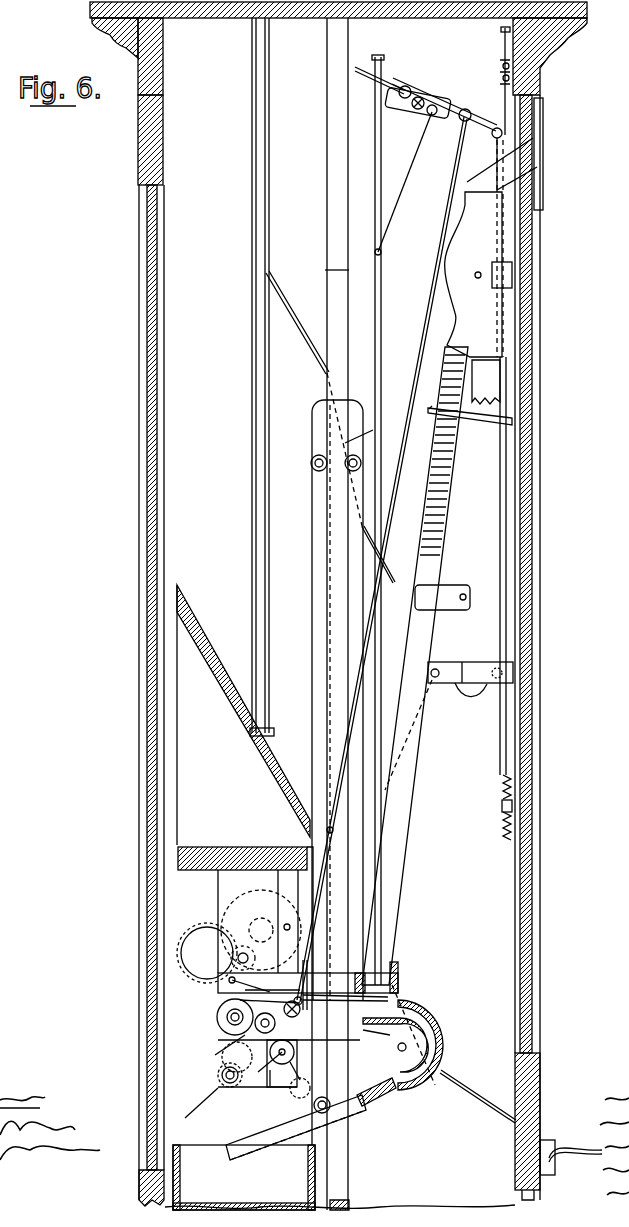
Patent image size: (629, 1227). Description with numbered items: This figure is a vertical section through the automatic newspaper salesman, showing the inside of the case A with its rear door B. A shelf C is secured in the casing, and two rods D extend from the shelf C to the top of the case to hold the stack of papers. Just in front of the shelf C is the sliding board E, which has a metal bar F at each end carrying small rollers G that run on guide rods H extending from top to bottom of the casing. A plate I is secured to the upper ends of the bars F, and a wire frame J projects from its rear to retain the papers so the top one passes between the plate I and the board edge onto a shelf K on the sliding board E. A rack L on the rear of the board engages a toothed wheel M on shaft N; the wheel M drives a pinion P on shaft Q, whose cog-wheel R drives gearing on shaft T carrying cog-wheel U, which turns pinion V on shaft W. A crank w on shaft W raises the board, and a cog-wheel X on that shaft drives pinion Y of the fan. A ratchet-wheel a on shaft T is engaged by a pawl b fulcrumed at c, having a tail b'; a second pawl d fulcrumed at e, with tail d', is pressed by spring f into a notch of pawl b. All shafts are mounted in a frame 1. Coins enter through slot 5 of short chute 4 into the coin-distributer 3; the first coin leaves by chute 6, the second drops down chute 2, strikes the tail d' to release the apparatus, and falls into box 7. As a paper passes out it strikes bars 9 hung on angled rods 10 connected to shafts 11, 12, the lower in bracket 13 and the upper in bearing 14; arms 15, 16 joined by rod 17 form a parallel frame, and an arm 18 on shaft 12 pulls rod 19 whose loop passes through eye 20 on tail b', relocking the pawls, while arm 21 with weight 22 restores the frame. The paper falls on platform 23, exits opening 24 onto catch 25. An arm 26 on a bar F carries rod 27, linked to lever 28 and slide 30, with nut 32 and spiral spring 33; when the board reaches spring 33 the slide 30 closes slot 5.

The case A is at (541, 866).
The door B is at (138, 435).
The shelf C is at (213, 640).
The rods D is at (260, 414).
The sliding board E is at (325, 825).
The metal bar F is at (312, 588).
The rollers G is at (311, 465).
The guide rods H is at (326, 270).
The plate I is at (373, 430).
The wire frame J is at (306, 345).
The shelf K is at (383, 563).
The rack L is at (312, 846).
The toothed wheel M is at (278, 846).
The shaft N is at (285, 925).
The pinion P is at (240, 952).
The shaft Q is at (228, 980).
The cog-wheel R is at (200, 937).
The shaft T is at (228, 1012).
The cog-wheel U is at (224, 1030).
The pinion V is at (294, 1074).
The shaft W is at (276, 1063).
The cog-wheel X is at (300, 1091).
The pinion Y is at (224, 1075).
The ratchet-wheel a is at (215, 1055).
The pawl b is at (291, 1015).
The tail b' is at (376, 1018).
The fulcrum c is at (275, 1025).
The pawl d is at (196, 987).
The tail d' is at (308, 977).
The fulcrum e is at (299, 985).
The spring f is at (243, 990).
The crank w is at (272, 1088).
The pinion z is at (230, 1089).
The arm z' is at (201, 1106).
The frame 1 is at (226, 878).
The chute 2 is at (400, 872).
The coin-distributer 3 is at (478, 274).
The short chute 4 is at (467, 182).
The slot 5 is at (543, 152).
The chute 6 is at (486, 382).
The box 7 is at (244, 1177).
The bars 9 is at (382, 318).
The rods 10 is at (390, 230).
The shaft 11 is at (437, 668).
The shaft 12 is at (432, 116).
The bracket 13 is at (475, 665).
The bearing 14 is at (410, 112).
The arm 15 is at (478, 692).
The arm 16 is at (494, 128).
The rod 17 is at (500, 520).
The arm 18 is at (455, 110).
The rod 19 is at (440, 276).
The eye 20 is at (325, 1003).
The arm 21 is at (388, 77).
The weight 22 is at (409, 90).
The platform 23 is at (452, 1087).
The opening 24 is at (542, 1130).
The catch 25 is at (572, 1142).
The arm 26 is at (423, 428).
The rod 27 is at (505, 436).
The lever 28 is at (503, 74).
The slide 30 is at (505, 42).
The nut 32 is at (503, 812).
The spiral spring 33 is at (503, 793).